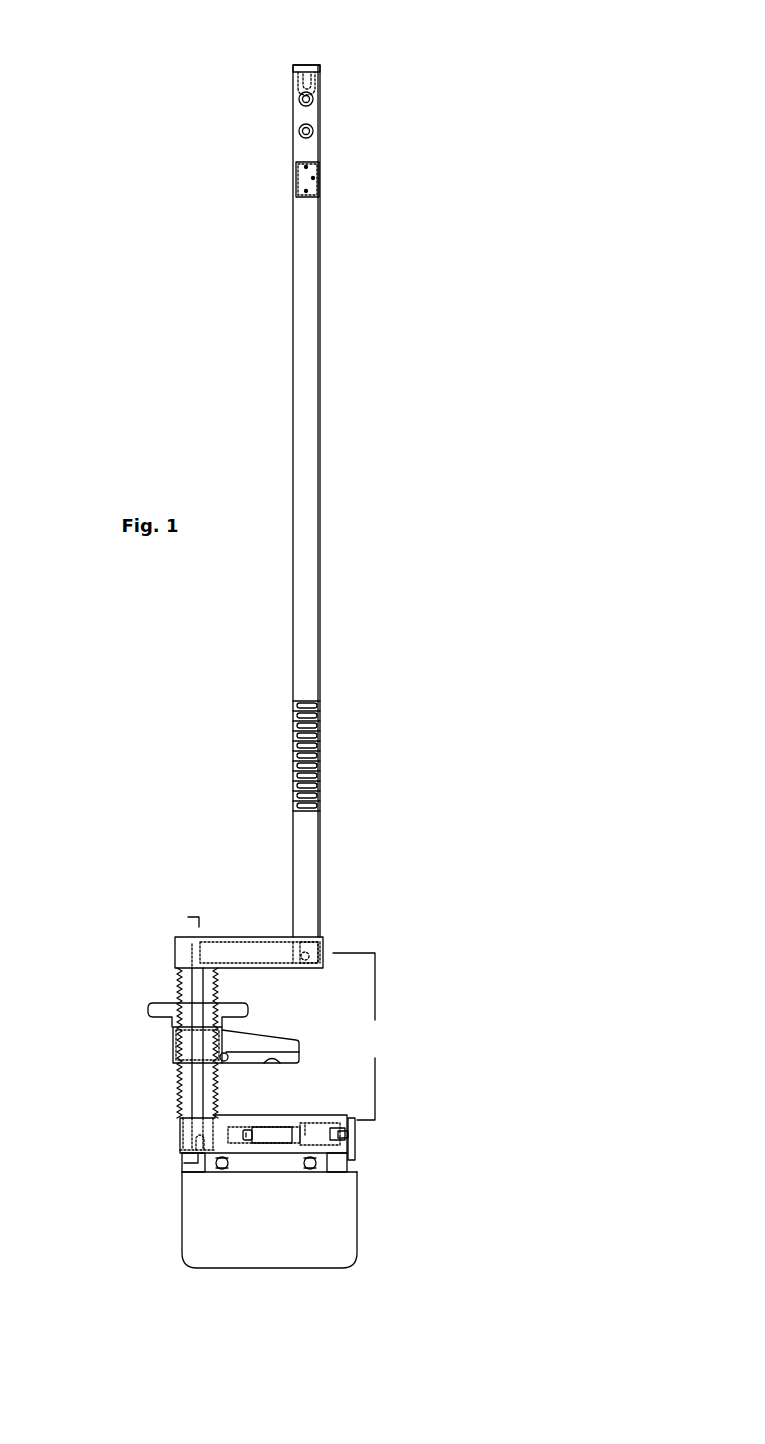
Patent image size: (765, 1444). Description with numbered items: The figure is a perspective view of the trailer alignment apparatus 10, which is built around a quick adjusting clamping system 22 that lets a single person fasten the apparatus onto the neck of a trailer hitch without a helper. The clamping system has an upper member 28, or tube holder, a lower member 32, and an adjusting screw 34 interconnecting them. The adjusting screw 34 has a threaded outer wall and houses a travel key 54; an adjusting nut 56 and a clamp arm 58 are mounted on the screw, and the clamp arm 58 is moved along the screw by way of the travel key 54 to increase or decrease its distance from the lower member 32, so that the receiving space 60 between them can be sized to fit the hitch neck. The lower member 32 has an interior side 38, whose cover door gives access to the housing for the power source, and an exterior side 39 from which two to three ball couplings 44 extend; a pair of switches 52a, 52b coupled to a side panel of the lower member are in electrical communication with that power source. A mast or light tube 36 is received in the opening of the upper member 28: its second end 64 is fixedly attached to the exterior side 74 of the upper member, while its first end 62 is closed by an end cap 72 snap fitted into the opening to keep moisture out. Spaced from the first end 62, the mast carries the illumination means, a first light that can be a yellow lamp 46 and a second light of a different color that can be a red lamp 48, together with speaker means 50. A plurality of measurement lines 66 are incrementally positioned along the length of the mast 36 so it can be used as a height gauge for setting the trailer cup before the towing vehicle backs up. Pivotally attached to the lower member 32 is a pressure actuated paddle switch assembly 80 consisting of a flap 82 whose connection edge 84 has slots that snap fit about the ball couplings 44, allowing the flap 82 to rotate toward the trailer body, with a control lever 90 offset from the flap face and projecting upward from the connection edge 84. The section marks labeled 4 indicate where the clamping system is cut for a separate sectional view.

The trailer alignment apparatus 10 is at (352, 505).
The mast 36 is at (303, 272).
The first end 62 is at (318, 66).
The end cap 72 is at (296, 81).
The red lamp 48 is at (300, 103).
The yellow lamp 46 is at (303, 136).
The speaker means 50 is at (300, 183).
The measurement lines 66 is at (320, 718).
The exterior side 74 is at (250, 942).
The upper member 28 is at (325, 952).
The second end 64 is at (305, 965).
The quick adjusting clamping system 22 is at (364, 1036).
The section line 4- 4 is at (182, 1039).
The adjusting nut 56 is at (214, 1003).
The adjusting screw 34 is at (196, 1105).
The clamp arm 58 is at (228, 1010).
The travel key 54 is at (240, 1040).
The receiving space 60 is at (259, 1060).
The interior side 38 is at (257, 1116).
The lower member 32 is at (318, 1116).
The exterior side 39 is at (183, 1152).
The switch 52a is at (332, 1140).
The switch 52b is at (343, 1134).
The control lever 90 is at (357, 1128).
The connection edge 84 is at (357, 1170).
The ball couplings 44 is at (222, 1168).
The pressure actuated paddle switch assembly 80 is at (357, 1238).
The flap 82 is at (262, 1222).